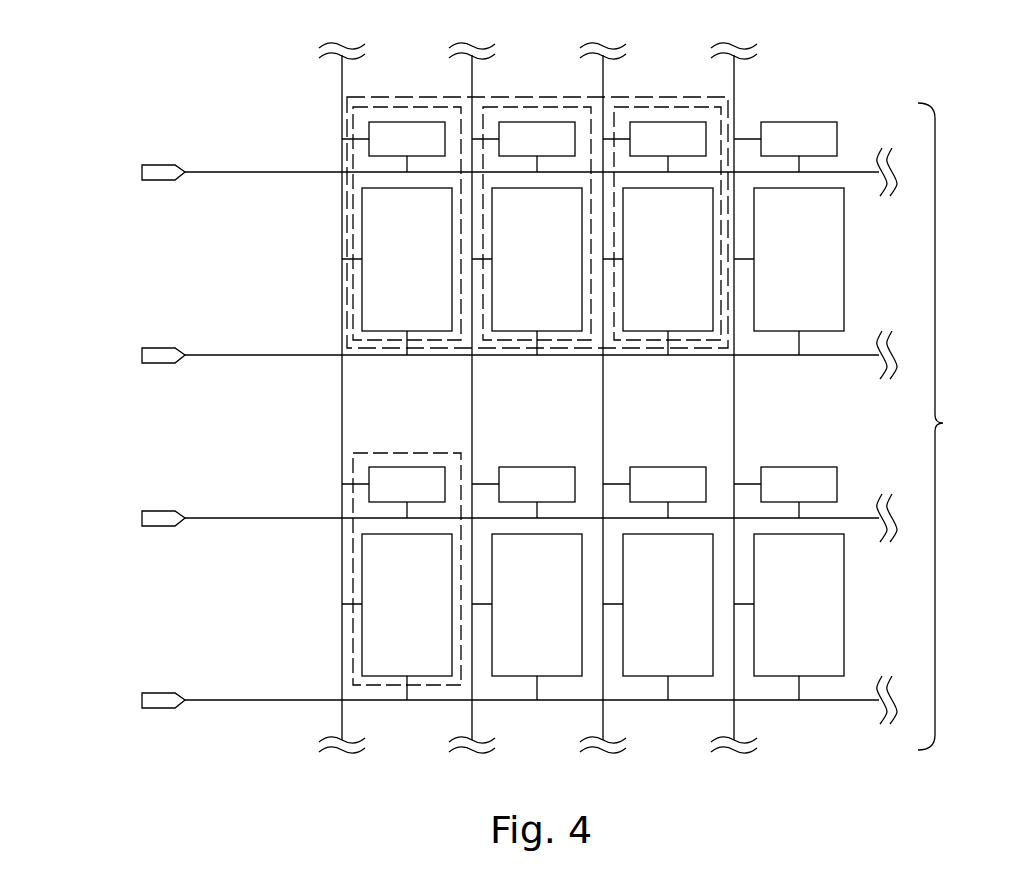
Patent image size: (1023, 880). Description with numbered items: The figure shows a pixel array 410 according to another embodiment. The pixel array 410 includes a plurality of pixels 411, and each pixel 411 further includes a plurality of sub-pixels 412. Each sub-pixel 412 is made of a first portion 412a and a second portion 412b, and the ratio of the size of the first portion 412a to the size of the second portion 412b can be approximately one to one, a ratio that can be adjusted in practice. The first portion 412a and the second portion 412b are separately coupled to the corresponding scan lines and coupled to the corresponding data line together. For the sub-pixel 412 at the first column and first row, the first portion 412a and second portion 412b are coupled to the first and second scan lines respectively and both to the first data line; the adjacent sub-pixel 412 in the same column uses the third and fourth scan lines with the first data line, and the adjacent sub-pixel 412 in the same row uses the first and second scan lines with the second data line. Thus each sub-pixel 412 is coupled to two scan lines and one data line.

The pixel array 410 is at (547, 380).
The pixel 411 is at (364, 97).
The sub-pixel 412 is at (407, 107).
The first portion 412a is at (366, 129).
The second portion 412b is at (362, 237).